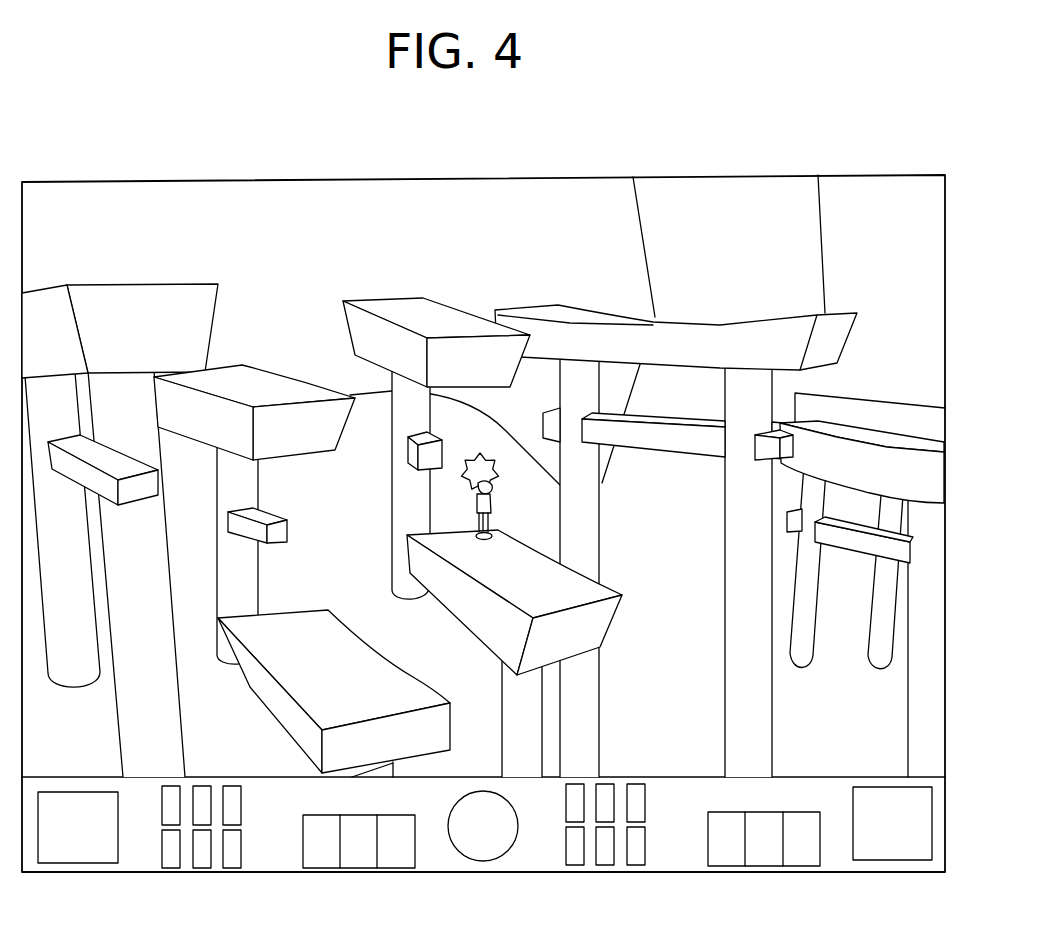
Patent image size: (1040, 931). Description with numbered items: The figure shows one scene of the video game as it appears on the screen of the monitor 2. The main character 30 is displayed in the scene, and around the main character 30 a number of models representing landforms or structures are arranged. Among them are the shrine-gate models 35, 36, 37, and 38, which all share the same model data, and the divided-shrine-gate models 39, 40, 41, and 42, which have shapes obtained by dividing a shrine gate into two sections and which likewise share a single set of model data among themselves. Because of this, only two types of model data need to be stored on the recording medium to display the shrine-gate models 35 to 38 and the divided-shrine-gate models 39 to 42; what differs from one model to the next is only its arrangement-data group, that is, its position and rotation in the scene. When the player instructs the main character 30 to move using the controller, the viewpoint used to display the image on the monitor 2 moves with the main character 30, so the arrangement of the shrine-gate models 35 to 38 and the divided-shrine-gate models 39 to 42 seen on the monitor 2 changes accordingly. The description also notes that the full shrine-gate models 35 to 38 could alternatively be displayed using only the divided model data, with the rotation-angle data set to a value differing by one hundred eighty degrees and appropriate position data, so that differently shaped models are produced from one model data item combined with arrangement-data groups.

The monitor 2 is at (840, 176).
The main character 30 is at (490, 505).
The shrine-gate model 35 is at (198, 287).
The shrine-gate model 36 is at (557, 307).
The shrine-gate model 37 is at (925, 476).
The shrine-gate model 38 is at (920, 427).
The divided-shrine-gate model 39 is at (265, 387).
The divided-shrine-gate model 40 is at (398, 308).
The divided-shrine-gate model 41 is at (309, 630).
The divided-shrine-gate model 42 is at (598, 622).